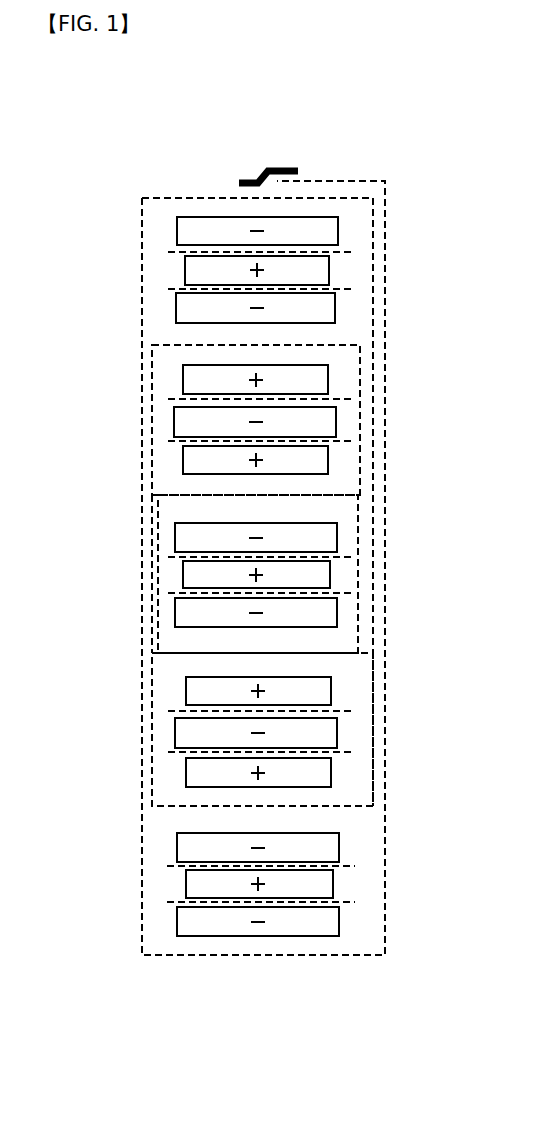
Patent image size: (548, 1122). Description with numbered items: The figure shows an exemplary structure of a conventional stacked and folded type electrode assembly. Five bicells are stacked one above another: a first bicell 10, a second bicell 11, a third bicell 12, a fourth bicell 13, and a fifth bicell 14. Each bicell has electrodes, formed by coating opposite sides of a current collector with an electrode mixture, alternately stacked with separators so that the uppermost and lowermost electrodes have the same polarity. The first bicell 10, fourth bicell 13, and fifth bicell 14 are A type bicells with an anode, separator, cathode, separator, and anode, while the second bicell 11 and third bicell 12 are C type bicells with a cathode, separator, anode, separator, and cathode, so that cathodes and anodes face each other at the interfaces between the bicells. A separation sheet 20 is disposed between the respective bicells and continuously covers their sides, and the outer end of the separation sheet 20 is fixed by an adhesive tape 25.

The first bicell 10 is at (178, 575).
The second bicell 11 is at (168, 418).
The third bicell 12 is at (168, 730).
The fourth bicell 13 is at (170, 272).
The fifth bicell 14 is at (165, 883).
The separation sheet 20 is at (387, 650).
The adhesive tape 25 is at (257, 178).